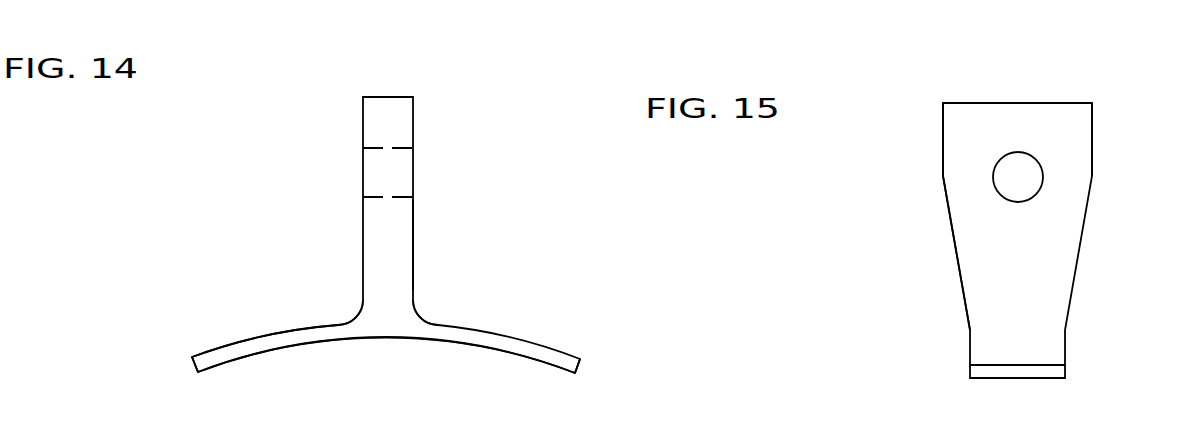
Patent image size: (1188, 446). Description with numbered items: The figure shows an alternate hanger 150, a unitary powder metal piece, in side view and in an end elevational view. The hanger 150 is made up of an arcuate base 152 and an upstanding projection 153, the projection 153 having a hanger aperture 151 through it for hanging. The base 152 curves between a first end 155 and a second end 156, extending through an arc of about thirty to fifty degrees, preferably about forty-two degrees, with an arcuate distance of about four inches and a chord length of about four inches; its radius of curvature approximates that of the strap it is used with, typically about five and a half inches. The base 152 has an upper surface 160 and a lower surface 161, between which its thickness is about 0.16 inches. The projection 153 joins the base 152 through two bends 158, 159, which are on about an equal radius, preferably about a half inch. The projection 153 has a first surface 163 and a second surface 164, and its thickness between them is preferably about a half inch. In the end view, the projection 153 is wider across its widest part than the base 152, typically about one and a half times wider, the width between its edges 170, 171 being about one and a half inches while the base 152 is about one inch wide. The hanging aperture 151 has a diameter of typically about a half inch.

In FIG. 14, the hanger 150 is at (331, 185).
In FIG. 15, the hanger 150 is at (918, 92).
In FIG. 14, the hanger aperture 151 is at (413, 193).
In FIG. 15, the hanger aperture 151 is at (1000, 190).
In FIG. 14, the base 152 is at (493, 350).
In FIG. 15, the base 152 is at (1065, 372).
In FIG. 14, the projection 153 is at (413, 245).
In FIG. 15, the projection 153 is at (943, 132).
In FIG. 14, the end 155 is at (192, 364).
In FIG. 14, the end 156 is at (580, 367).
In FIG. 14, the bend 158 is at (420, 310).
In FIG. 14, the bend 159 is at (353, 313).
In FIG. 14, the surface 160 is at (262, 333).
In FIG. 14, the surface 161 is at (310, 344).
In FIG. 14, the surface 163 is at (363, 123).
In FIG. 14, the surface 164 is at (414, 106).
In FIG. 15, the edge 170 is at (943, 172).
In FIG. 15, the edge 171 is at (1092, 133).